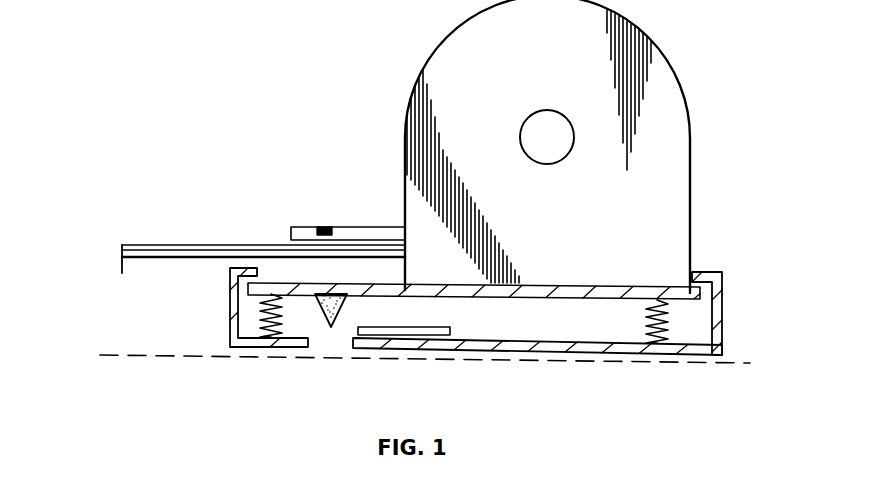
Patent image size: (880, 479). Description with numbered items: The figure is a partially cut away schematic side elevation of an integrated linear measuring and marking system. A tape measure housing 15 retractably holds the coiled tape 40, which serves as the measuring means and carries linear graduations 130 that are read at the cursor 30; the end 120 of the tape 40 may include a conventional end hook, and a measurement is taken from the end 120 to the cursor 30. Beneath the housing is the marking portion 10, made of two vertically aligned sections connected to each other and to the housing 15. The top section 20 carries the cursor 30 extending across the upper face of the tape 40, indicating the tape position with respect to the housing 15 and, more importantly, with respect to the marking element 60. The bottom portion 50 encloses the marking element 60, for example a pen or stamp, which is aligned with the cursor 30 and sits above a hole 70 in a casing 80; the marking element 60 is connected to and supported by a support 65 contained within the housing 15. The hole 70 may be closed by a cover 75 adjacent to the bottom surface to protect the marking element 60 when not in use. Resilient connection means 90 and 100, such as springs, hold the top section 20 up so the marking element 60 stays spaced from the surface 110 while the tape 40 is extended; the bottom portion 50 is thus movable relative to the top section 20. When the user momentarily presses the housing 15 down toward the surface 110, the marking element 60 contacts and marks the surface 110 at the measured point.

The marking portion 10 is at (515, 336).
The tape measure housing 15 is at (533, 50).
The top section 20 is at (422, 225).
The cursor 30 is at (323, 226).
The tape 40 is at (167, 245).
The bottom portion 50 is at (229, 302).
The marking element 60 is at (340, 302).
The support 65 is at (673, 290).
The hole 70 is at (332, 343).
The cover 75 is at (400, 333).
The casing 80 is at (722, 310).
The resilient connection means 90 is at (273, 335).
The resilient connection means 100 is at (670, 345).
The surface 110 is at (102, 356).
The end of tape 120 is at (120, 260).
The linear graduations 130 is at (205, 252).